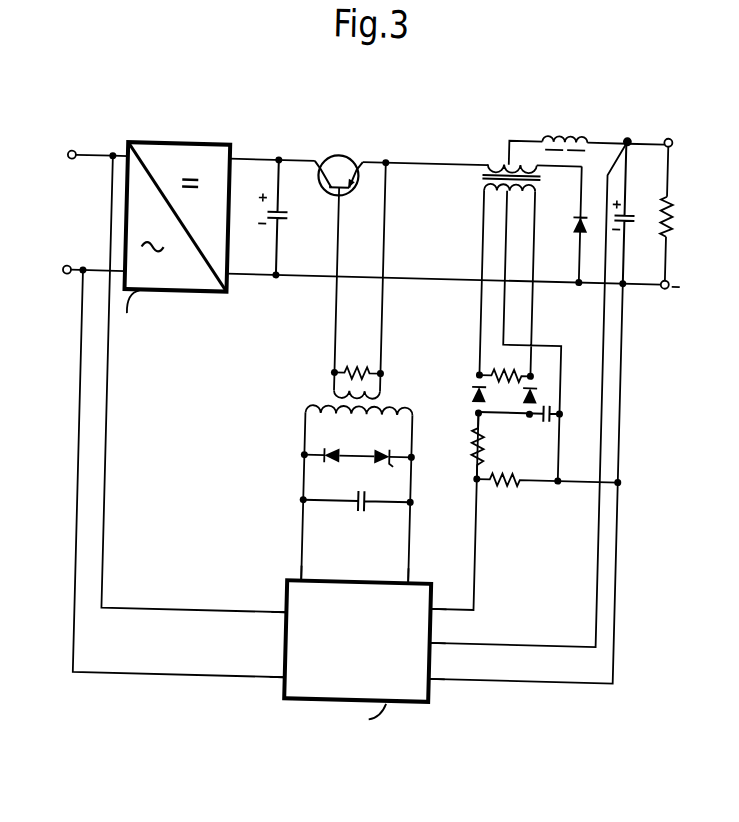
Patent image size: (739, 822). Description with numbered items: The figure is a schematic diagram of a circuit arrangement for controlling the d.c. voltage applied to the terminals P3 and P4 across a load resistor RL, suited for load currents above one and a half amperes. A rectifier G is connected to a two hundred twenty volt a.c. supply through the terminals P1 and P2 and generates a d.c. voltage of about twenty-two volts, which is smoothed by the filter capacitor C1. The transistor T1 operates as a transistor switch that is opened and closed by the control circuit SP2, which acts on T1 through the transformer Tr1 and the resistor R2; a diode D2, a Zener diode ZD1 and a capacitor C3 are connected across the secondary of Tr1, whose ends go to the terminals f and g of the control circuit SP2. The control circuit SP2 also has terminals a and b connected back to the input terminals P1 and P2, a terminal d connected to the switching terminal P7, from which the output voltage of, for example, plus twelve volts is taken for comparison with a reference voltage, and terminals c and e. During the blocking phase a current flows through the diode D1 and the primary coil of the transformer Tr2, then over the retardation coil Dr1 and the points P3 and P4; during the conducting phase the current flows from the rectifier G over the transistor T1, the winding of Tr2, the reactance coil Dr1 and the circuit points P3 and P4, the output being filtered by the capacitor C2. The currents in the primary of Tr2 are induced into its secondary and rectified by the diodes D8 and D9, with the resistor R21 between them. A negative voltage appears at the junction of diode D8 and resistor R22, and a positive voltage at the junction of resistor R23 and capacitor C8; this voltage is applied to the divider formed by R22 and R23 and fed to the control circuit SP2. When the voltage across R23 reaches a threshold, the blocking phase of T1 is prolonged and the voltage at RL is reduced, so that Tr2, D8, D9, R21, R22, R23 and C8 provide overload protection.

The terminal P1 is at (78, 143).
The terminal P2 is at (73, 256).
The terminal P3 is at (662, 128).
The terminal P4 is at (663, 301).
The terminal P7 is at (626, 127).
The rectifier G is at (184, 224).
The capacitor C1 is at (282, 217).
The transistor T1 is at (339, 160).
The resistor R2 is at (357, 358).
The transformer Tr1 is at (373, 403).
The diode D2 is at (331, 472).
The Zener diode ZD1 is at (383, 474).
The capacitor C3 is at (356, 514).
The transformer Tr2 is at (510, 162).
The retardation coil Dr1 is at (565, 129).
The diode D1 is at (568, 224).
The capacitor C2 is at (638, 212).
The load resistor RL is at (657, 213).
The resistor R21 is at (504, 391).
The diode D8 is at (463, 398).
The diode D9 is at (542, 394).
The capacitor C8 is at (518, 431).
The resistor R22 is at (492, 446).
The resistor R23 is at (547, 496).
The control circuit SP2 is at (357, 660).
The terminal a is at (278, 601).
The terminal b is at (276, 667).
The terminal c is at (438, 597).
The terminal d is at (438, 634).
The terminal e is at (437, 669).
The terminal f is at (294, 565).
The terminal g is at (415, 566).